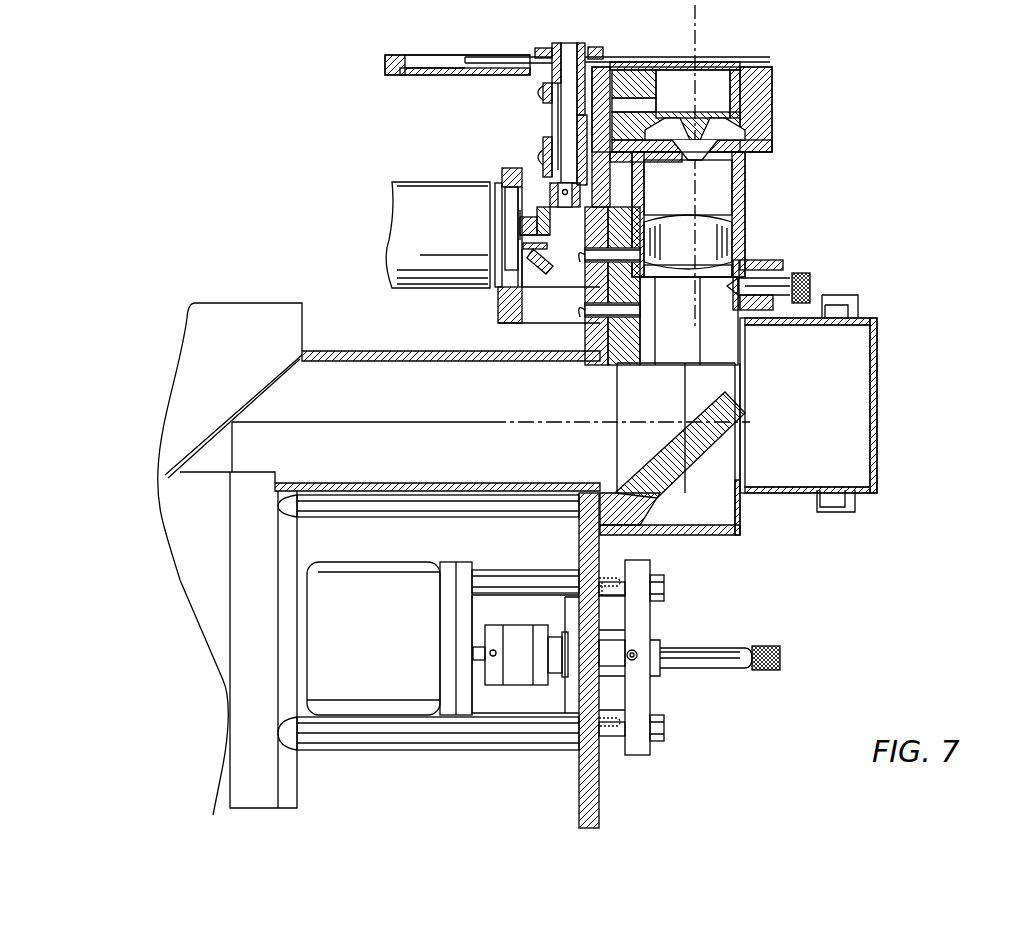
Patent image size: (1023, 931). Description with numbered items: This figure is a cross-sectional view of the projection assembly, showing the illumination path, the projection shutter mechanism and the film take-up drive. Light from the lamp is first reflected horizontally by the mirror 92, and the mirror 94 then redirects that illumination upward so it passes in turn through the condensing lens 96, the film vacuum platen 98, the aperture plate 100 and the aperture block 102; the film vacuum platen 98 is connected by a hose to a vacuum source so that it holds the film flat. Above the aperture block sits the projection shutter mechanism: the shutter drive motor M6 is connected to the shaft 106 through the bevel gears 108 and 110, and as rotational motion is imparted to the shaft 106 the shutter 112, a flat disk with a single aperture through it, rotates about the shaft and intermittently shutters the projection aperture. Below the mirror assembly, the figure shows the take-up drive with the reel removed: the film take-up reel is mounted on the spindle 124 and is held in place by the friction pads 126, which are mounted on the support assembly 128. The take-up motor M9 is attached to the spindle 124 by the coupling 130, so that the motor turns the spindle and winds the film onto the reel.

The mirror 92 is at (243, 398).
The mirror 94 is at (705, 400).
The condensing lens 96 is at (705, 240).
The film vacuum platen 98 is at (745, 182).
The aperture plate 100 is at (765, 150).
The aperture block 102 is at (770, 120).
The shaft 106 is at (562, 112).
The bevel gear 108 is at (545, 278).
The bevel gear 110 is at (585, 230).
The shutter 112 is at (700, 58).
The spindle 124 is at (692, 648).
The friction pads 126 is at (665, 585).
The support assembly 128 is at (640, 688).
The coupling 130 is at (522, 636).
The shutter drive motor M6 is at (432, 208).
The take-up motor M9 is at (364, 700).